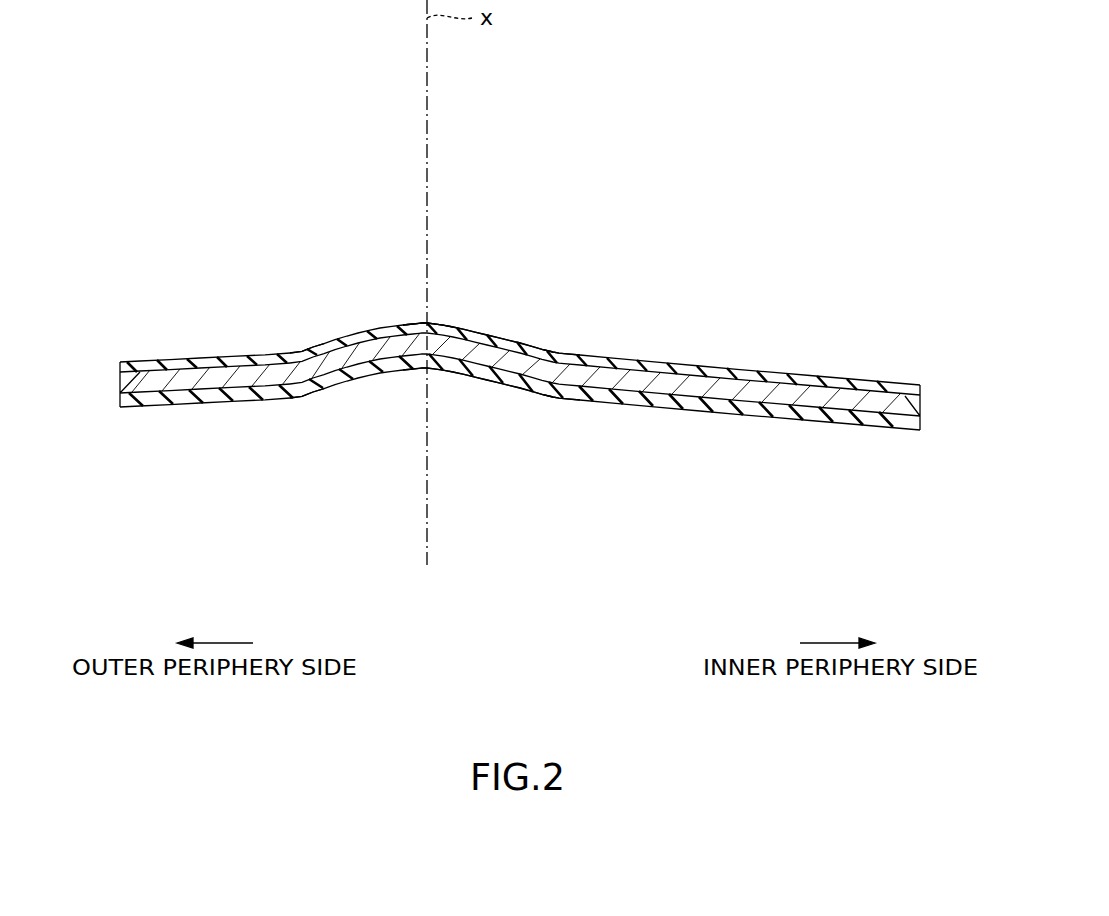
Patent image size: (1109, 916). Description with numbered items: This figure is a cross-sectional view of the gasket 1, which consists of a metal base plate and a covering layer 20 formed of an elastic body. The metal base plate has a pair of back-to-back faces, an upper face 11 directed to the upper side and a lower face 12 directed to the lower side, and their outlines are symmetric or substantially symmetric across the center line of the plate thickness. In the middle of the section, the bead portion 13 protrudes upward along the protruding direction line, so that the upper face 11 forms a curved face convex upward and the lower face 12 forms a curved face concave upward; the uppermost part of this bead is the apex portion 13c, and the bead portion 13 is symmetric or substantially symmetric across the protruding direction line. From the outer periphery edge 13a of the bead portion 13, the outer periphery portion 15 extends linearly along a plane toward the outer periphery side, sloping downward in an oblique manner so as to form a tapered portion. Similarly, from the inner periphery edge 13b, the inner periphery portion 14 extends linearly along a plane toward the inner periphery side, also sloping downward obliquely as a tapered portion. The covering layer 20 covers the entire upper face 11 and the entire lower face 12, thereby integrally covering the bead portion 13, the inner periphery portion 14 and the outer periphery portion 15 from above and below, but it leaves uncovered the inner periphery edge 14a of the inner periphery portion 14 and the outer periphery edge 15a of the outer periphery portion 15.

The gasket 1 is at (545, 660).
The upper face 11 is at (527, 345).
The lower face 12 is at (508, 372).
The bead portion 13 is at (487, 333).
The outer periphery edge 13a is at (306, 372).
The inner periphery edge 13b is at (555, 366).
The apex portion 13c is at (430, 328).
The inner periphery portion 14 is at (710, 403).
The inner periphery edge 14a is at (922, 407).
The outer periphery portion 15 is at (196, 402).
The outer periphery edge 15a is at (120, 382).
The covering layer 20 is at (252, 355).